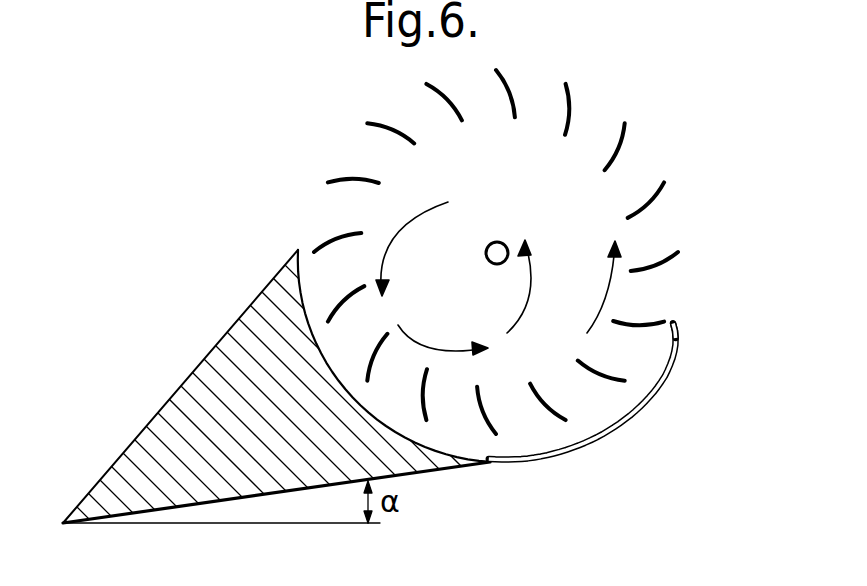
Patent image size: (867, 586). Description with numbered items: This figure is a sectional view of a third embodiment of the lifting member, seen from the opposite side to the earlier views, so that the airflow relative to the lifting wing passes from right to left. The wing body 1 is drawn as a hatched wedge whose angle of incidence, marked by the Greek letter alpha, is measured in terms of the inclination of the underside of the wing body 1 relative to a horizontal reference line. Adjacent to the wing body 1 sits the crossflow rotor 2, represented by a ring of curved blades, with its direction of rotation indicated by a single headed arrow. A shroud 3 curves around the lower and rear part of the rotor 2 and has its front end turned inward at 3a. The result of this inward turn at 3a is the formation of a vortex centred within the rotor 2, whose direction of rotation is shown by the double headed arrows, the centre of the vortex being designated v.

The wing body 1 is at (172, 352).
The crossflow rotor 2 is at (665, 142).
The shroud 3 is at (620, 422).
The inwardly turned front end of the shroud 3a is at (678, 332).